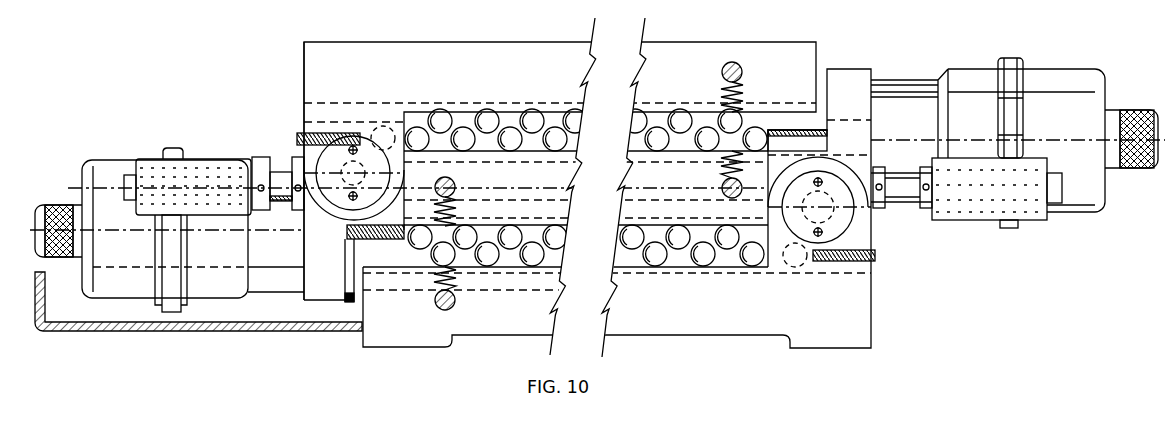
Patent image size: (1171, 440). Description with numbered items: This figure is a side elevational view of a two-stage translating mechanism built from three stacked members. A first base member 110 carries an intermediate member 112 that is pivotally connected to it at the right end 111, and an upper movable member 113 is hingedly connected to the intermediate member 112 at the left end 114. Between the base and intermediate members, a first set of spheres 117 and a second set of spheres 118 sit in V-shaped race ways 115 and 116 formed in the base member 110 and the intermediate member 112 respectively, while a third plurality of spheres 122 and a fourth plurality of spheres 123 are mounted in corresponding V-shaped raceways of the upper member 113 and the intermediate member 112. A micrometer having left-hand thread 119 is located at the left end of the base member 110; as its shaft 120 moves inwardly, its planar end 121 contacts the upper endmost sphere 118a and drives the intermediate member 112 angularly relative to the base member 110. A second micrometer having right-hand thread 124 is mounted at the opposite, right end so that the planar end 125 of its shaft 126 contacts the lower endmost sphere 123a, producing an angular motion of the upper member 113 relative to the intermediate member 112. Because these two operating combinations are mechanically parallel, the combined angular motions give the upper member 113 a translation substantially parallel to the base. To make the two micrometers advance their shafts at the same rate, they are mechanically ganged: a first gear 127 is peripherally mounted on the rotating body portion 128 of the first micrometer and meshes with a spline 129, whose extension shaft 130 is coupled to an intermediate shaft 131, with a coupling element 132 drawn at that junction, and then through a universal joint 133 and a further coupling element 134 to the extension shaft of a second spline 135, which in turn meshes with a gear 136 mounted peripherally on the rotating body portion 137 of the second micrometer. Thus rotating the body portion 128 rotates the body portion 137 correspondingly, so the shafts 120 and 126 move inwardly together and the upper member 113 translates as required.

The first base member 110 is at (769, 315).
The right end 111 is at (876, 237).
The intermediate member 112 is at (477, 210).
The upper movable member 113 is at (516, 83).
The left end 114 is at (283, 171).
The V-shaped race way 115 is at (670, 268).
The V-shaped race way 116 is at (679, 224).
The first set of spheres 117 is at (700, 267).
The second set of spheres 118 is at (663, 240).
The upper endmost sphere 118a is at (481, 319).
The micrometer having left-hand thread 119 is at (81, 160).
The shaft 120 is at (375, 238).
The planar end 121 is at (407, 242).
The third plurality of spheres 122 is at (537, 112).
The fourth plurality of spheres 123 is at (523, 151).
The lower endmost sphere 123a is at (703, 142).
The second micrometer having right-hand thread 124 is at (1108, 96).
The planar end 125 is at (789, 107).
The shaft 126 is at (821, 128).
The first gear 127 is at (163, 313).
The rotating body portion 128 is at (138, 253).
The spline 129 is at (203, 168).
The extension shaft 130 is at (278, 180).
The intermediate shaft 131 is at (467, 183).
The threaded collar 132 is at (299, 206).
The universal joint 133 is at (881, 207).
The shaft 134 is at (900, 180).
The spline 135 is at (957, 210).
The gear 136 is at (1020, 60).
The rotating body portion 137 is at (1074, 123).